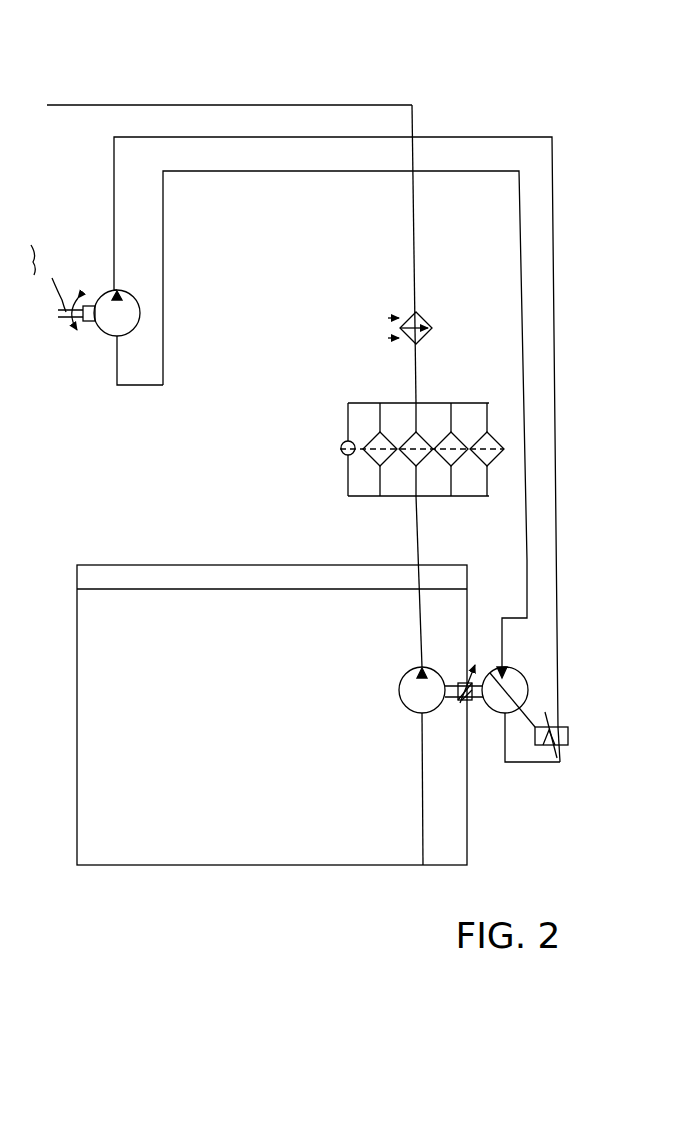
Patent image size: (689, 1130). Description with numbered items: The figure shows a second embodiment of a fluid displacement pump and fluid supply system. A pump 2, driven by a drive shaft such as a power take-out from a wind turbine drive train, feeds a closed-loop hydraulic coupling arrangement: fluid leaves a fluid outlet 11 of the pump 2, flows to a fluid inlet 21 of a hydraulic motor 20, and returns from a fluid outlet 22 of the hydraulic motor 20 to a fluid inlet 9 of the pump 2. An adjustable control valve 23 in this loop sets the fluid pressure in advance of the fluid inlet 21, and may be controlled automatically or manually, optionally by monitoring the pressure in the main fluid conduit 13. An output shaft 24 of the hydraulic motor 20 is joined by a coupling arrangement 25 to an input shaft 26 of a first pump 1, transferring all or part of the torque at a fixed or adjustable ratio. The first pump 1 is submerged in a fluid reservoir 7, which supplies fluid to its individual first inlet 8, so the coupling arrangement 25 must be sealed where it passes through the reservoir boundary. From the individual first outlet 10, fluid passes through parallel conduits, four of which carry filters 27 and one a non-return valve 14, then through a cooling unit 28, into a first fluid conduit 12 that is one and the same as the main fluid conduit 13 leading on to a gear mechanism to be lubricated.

The first pump 1 is at (410, 705).
The pump 2 is at (107, 322).
The fluid reservoir 7 is at (238, 741).
The first inlet 8 is at (423, 777).
The fluid inlet 9 is at (140, 386).
The first outlet 10 is at (418, 550).
The fluid outlet 11 is at (113, 222).
The first fluid conduit 12 is at (413, 268).
The main fluid conduit 13 is at (222, 103).
The non-return valve 14 is at (343, 440).
The hydraulic motor 20 is at (515, 672).
The fluid inlet 21 is at (530, 765).
The fluid outlet 22 is at (525, 560).
The control valve 23 is at (565, 727).
The output shaft 24 is at (473, 710).
The coupling arrangement 25 is at (466, 680).
The input shaft 26 is at (462, 705).
The filters 27 is at (490, 440).
The cooling unit 28 is at (420, 310).